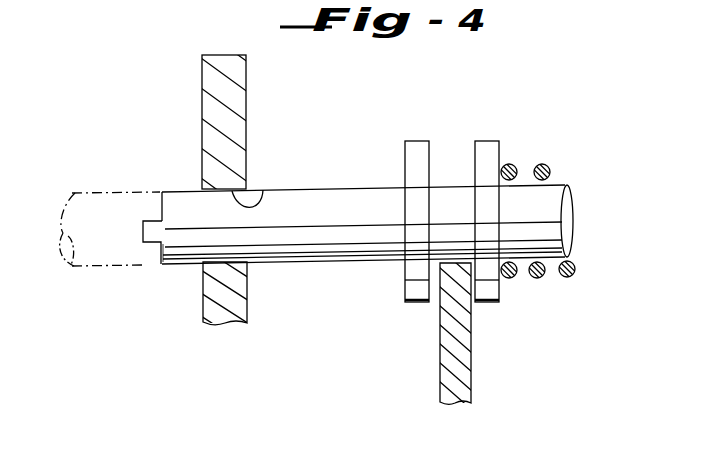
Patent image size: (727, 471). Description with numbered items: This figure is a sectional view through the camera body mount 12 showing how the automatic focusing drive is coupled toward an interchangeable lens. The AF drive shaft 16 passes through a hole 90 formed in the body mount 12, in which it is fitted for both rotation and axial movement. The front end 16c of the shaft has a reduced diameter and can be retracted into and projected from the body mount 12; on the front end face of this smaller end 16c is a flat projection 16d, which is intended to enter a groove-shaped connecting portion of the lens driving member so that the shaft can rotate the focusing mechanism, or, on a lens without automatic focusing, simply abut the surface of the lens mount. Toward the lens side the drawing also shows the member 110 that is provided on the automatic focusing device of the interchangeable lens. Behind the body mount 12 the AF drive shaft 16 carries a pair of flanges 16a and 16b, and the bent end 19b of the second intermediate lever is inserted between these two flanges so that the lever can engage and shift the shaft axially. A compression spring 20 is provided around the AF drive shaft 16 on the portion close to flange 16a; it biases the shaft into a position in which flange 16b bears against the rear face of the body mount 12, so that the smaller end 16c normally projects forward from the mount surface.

The member 110 is at (88, 194).
The front end 16c is at (185, 200).
The body mount 12 is at (236, 122).
The hole 90 is at (263, 190).
The flange 16b is at (419, 148).
The flange 16a is at (488, 148).
The AF drive shaft 16 is at (566, 183).
The flat projection 16d is at (152, 240).
The compression spring 20 is at (538, 280).
The bent end 19b is at (470, 357).